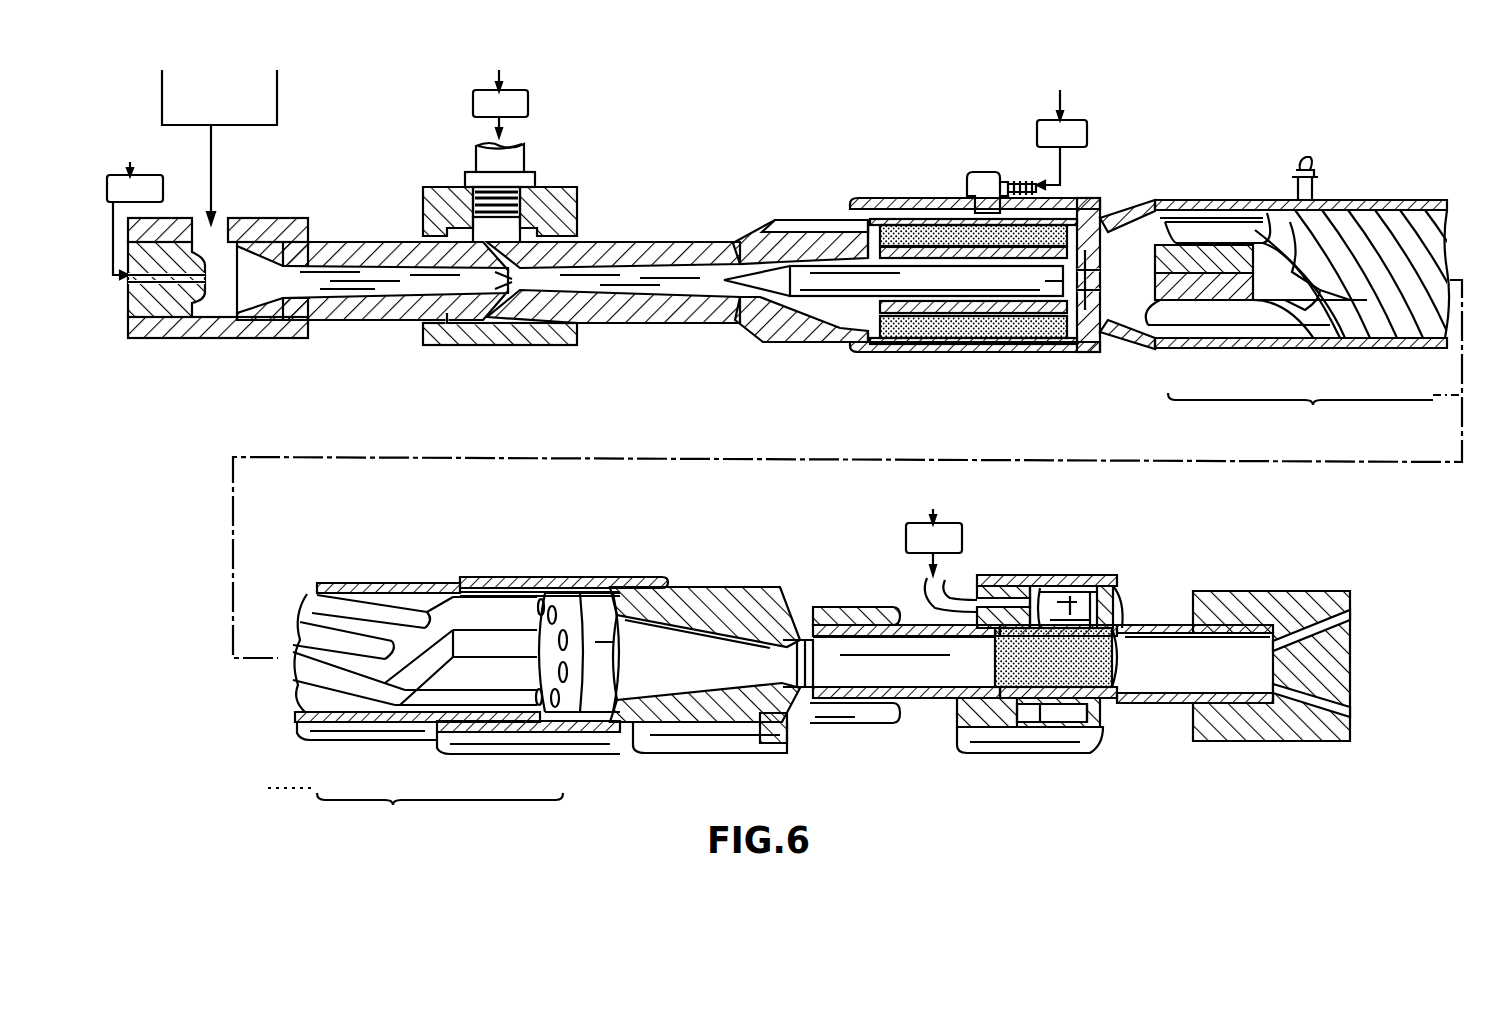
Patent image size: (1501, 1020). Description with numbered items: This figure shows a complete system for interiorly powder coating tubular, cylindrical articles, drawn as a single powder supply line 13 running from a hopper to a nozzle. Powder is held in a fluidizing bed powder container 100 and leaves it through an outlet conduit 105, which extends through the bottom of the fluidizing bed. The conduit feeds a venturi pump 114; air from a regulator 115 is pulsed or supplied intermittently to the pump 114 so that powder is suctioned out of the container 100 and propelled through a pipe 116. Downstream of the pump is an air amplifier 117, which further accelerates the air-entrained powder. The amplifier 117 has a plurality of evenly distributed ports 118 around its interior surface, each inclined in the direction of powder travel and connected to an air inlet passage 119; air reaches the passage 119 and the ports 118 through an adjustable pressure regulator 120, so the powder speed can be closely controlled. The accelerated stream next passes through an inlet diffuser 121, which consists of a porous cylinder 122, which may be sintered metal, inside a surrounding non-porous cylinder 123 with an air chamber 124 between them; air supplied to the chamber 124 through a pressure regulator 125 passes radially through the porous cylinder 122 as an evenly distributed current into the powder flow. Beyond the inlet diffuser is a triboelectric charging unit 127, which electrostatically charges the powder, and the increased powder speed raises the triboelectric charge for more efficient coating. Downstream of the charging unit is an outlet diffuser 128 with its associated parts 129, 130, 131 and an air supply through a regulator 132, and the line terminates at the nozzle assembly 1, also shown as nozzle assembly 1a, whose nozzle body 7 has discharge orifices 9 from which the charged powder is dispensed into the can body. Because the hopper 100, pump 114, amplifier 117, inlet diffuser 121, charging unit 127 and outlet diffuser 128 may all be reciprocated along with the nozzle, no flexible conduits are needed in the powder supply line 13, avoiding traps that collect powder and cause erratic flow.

The fluidizing bed powder container 100 is at (279, 78).
The outlet conduit 105 is at (216, 170).
The regulator 115 is at (180, 163).
The venturi pump 114 is at (262, 338).
The pipe 116 is at (362, 245).
The ports 118 is at (506, 280).
The adjustable pressure regulator 120 is at (530, 100).
The air amplifier 117 is at (580, 345).
The air inlet passage 119 is at (510, 230).
The inlet diffuser 121 is at (867, 352).
The non-porous cylinder 123 is at (885, 202).
The air chamber 124 is at (923, 217).
The porous cylinder 122 is at (940, 240).
The pressure regulator 125 is at (1087, 128).
The triboelectric charging unit 127 is at (1447, 200).
The nozzle assembly 1 is at (1300, 578).
The air regulator for outlet diffuser 132 is at (906, 537).
The outlet diffuser 128 is at (977, 757).
The diffuser inner part 130 is at (1047, 582).
The diffuser inner part 131 is at (1077, 582).
The diffuser end wall 129 is at (1103, 582).
The nozzle assembly 1a is at (1172, 623).
The powder supply line 13 is at (1167, 681).
The nozzle body 7 is at (1330, 733).
The discharge orifices 9 is at (1352, 611).